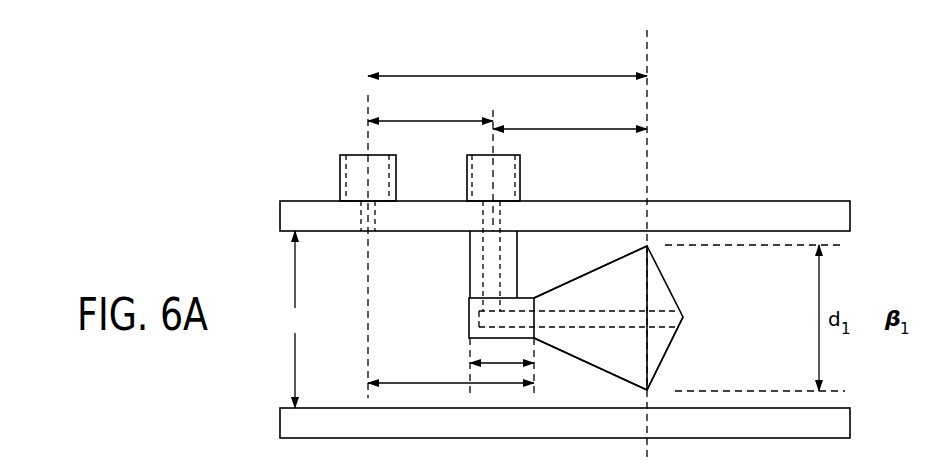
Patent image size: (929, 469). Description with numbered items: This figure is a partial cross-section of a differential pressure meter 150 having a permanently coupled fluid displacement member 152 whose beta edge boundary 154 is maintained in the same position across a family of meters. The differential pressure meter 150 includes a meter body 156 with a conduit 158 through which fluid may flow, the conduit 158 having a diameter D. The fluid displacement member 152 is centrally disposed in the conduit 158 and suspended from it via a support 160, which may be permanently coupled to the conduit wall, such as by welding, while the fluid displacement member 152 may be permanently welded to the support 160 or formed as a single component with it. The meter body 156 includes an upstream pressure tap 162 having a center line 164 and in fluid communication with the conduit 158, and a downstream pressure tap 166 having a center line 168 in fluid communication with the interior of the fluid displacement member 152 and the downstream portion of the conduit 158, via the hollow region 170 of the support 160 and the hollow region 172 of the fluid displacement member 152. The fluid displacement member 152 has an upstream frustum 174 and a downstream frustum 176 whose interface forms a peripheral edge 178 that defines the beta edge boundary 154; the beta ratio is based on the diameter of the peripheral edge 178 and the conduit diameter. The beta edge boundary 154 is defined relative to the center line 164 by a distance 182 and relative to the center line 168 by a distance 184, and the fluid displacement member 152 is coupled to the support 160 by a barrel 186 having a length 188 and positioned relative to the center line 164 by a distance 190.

The differential pressure meter 150 is at (795, 108).
The fluid displacement member 152 is at (672, 301).
The beta edge boundary 154 is at (650, 447).
The meter body 156 is at (820, 201).
The conduit 158 is at (326, 352).
The support 160 is at (470, 258).
The upstream pressure tap 162 is at (340, 184).
The center line 164 is at (367, 95).
The downstream pressure tap 166 is at (521, 184).
The center line 168 is at (493, 110).
The hollow region 170 is at (487, 262).
The hollow region 172 is at (578, 310).
The upstream frustum 174 is at (618, 378).
The downstream frustum 176 is at (661, 275).
The peripheral edge 178 is at (650, 350).
The distance 182 is at (507, 76).
The distance 184 is at (570, 129).
The barrel 186 is at (492, 340).
The length 188 is at (500, 364).
The distance 190 is at (362, 377).